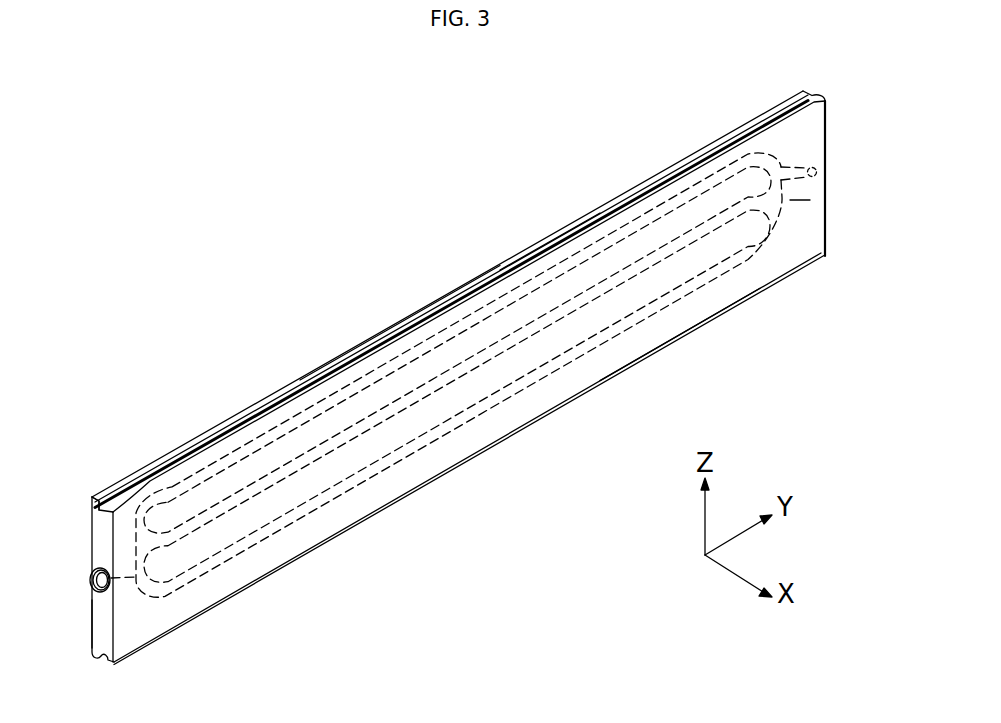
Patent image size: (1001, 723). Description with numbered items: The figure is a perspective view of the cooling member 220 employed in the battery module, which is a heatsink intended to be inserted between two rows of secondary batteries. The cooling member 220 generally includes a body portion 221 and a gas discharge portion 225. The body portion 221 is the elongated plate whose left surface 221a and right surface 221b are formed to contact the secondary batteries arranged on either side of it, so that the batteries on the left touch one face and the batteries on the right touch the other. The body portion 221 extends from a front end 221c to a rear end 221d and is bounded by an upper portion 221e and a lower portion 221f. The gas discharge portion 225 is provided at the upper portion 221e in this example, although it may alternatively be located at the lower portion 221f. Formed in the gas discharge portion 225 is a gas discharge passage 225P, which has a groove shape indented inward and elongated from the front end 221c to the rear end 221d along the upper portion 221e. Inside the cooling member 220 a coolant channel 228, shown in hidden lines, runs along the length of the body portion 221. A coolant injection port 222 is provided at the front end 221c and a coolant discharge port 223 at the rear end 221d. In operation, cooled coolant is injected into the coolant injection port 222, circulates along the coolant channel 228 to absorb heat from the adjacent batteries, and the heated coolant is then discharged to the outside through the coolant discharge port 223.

The cooling member 220 is at (262, 263).
The body portion 221 is at (148, 497).
The left surface 221a is at (398, 322).
The right surface 221b is at (795, 240).
The front end 221c is at (105, 619).
The rear end 221d is at (827, 213).
The upper portion 221e is at (540, 258).
The lower portion 221f is at (683, 333).
The coolant injection port 222 is at (90, 580).
The coolant discharge port 223 is at (827, 172).
The gas discharge portion 225 is at (232, 418).
The gas discharge passage 225P is at (113, 487).
The coolant channel 228 is at (763, 152).